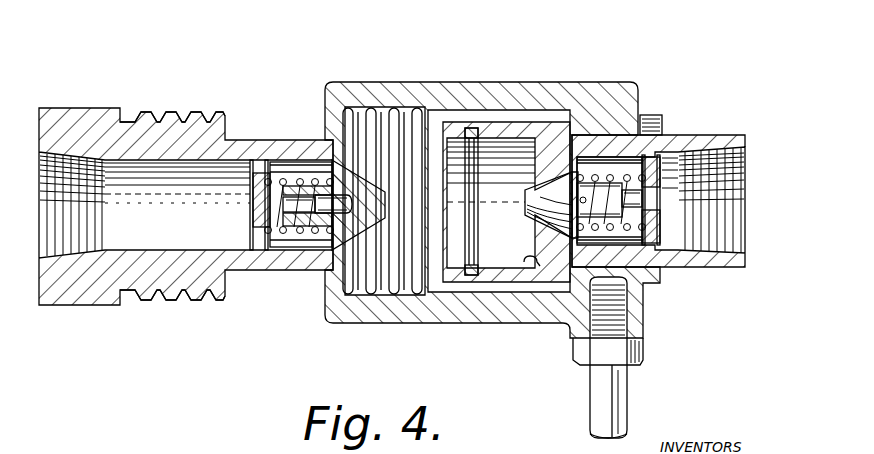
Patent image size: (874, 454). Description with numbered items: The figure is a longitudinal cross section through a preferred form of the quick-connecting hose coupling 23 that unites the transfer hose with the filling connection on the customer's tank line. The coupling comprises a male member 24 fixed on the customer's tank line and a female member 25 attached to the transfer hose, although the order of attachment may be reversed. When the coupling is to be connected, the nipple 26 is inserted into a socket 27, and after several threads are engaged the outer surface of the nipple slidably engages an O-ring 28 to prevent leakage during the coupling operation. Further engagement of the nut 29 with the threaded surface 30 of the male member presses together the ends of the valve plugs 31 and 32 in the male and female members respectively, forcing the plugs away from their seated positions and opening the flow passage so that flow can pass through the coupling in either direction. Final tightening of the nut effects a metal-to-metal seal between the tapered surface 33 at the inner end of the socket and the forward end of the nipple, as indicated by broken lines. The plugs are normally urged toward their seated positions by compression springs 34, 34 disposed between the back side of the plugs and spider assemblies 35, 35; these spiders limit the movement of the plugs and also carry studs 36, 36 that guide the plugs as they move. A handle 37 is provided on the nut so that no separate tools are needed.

The quick-connecting hose coupling 23 is at (297, 80).
The male member 24 is at (100, 105).
The female member 25 is at (492, 85).
The nipple 26 is at (275, 262).
The socket 27 is at (508, 258).
The O-ring 28 is at (468, 250).
The nut 29 is at (365, 95).
The threaded surface 30 is at (172, 112).
The valve plug 31 is at (350, 175).
The valve plug 32 is at (543, 195).
The tapered surface 33 is at (528, 265).
The compression spring 34 is at (280, 223).
The spider assembly 35 is at (250, 208).
The stud 36 is at (298, 200).
The handle 37 is at (600, 385).